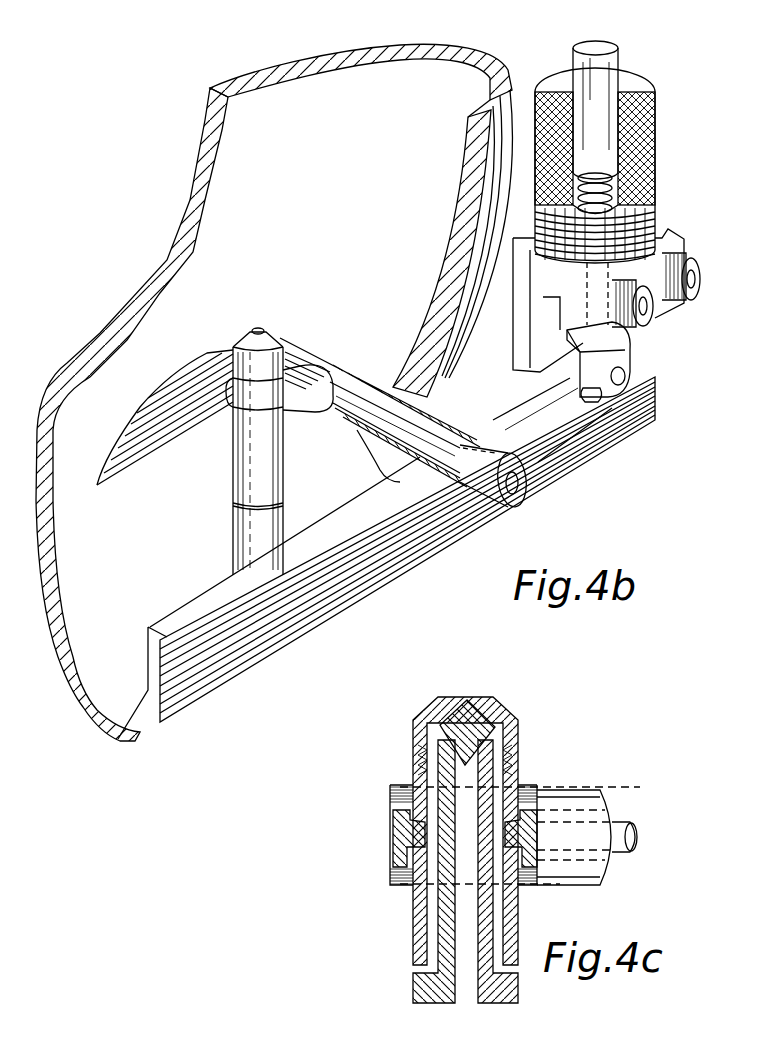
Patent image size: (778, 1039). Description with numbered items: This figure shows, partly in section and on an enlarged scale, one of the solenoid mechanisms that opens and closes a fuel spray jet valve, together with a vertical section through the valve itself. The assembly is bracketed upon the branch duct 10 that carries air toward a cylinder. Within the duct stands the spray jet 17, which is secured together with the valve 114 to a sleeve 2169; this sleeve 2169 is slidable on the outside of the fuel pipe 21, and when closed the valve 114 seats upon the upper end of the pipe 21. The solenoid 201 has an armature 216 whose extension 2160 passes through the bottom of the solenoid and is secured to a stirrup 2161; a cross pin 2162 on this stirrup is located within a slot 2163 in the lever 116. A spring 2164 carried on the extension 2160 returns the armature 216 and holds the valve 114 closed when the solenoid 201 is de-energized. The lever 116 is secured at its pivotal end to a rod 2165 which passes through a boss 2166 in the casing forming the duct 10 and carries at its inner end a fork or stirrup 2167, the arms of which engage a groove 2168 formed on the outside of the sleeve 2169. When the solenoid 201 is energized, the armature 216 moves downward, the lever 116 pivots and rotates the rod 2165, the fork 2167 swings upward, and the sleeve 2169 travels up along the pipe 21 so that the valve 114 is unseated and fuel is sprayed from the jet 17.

In FIG. 4B, the branch duct 10 is at (445, 77).
In FIG. 4B, the solenoid 201 is at (657, 160).
In FIG. 4B, the armature 216 is at (597, 133).
In FIG. 4B, the spring 2164 is at (614, 197).
In FIG. 4B, the extension 2160 is at (607, 328).
In FIG. 4B, the stirrup 2161 is at (618, 352).
In FIG. 4B, the cross pin 2162 is at (622, 378).
In FIG. 4B, the slot 2163 is at (600, 403).
In FIG. 4B, the lever 116 is at (557, 440).
In FIG. 4C, the lever 116 is at (587, 837).
In FIG. 4B, the rod 2165 is at (517, 494).
In FIG. 4B, the boss 2166 is at (442, 468).
In FIG. 4B, the stirrup 2167 is at (302, 360).
In FIG. 4B, the groove 2168 is at (232, 385).
In FIG. 4C, the groove 2168 is at (422, 822).
In FIG. 4B, the sleeve 2169 is at (243, 443).
In FIG. 4C, the sleeve 2169 is at (418, 922).
In FIG. 4B, the spray jet 17 is at (255, 326).
In FIG. 4C, the spray jet 17 is at (427, 710).
In FIG. 4B, the pipe 21 is at (248, 534).
In FIG. 4C, the pipe 21 is at (497, 771).
In FIG. 4C, the valve 114 is at (470, 722).